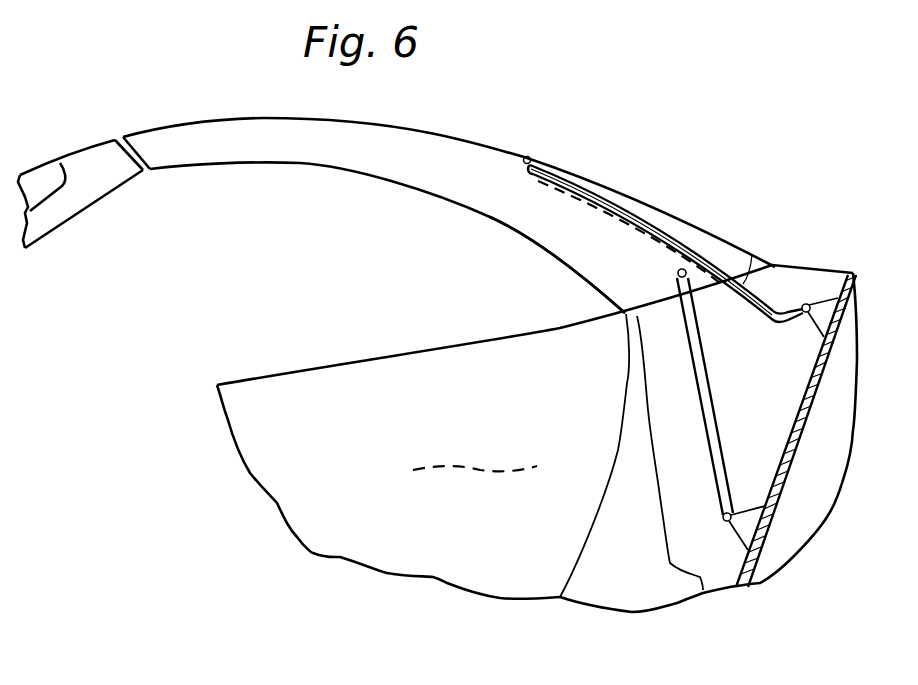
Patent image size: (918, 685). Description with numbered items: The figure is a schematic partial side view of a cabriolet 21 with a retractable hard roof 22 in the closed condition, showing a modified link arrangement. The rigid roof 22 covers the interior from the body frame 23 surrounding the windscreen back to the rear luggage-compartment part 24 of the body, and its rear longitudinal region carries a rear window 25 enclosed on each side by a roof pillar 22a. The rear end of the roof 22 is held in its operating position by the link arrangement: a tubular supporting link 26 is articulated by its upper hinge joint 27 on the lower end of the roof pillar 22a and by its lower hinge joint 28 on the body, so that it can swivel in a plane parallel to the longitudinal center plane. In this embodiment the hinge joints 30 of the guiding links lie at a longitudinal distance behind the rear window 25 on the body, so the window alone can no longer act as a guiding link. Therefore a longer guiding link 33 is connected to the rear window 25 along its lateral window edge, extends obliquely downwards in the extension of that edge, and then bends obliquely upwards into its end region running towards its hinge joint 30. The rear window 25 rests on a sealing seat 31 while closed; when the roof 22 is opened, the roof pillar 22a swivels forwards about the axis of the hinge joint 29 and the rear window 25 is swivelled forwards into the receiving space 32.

The cabriolet 21 is at (72, 147).
The roof 22 is at (223, 120).
The roof pillar 22a is at (570, 237).
The body frame 23 is at (102, 177).
The rear luggage-compartment part 24 is at (817, 267).
The rear window 25 is at (635, 200).
The supporting link 26 is at (703, 393).
The hinge joint 27 is at (677, 276).
The hinge joint 28 is at (723, 517).
The hinge joint 29 is at (527, 156).
The hinge joint 30 is at (801, 316).
The sealing seat 31 is at (568, 188).
The receiving space 32 is at (458, 475).
The guiding link 33 is at (752, 255).